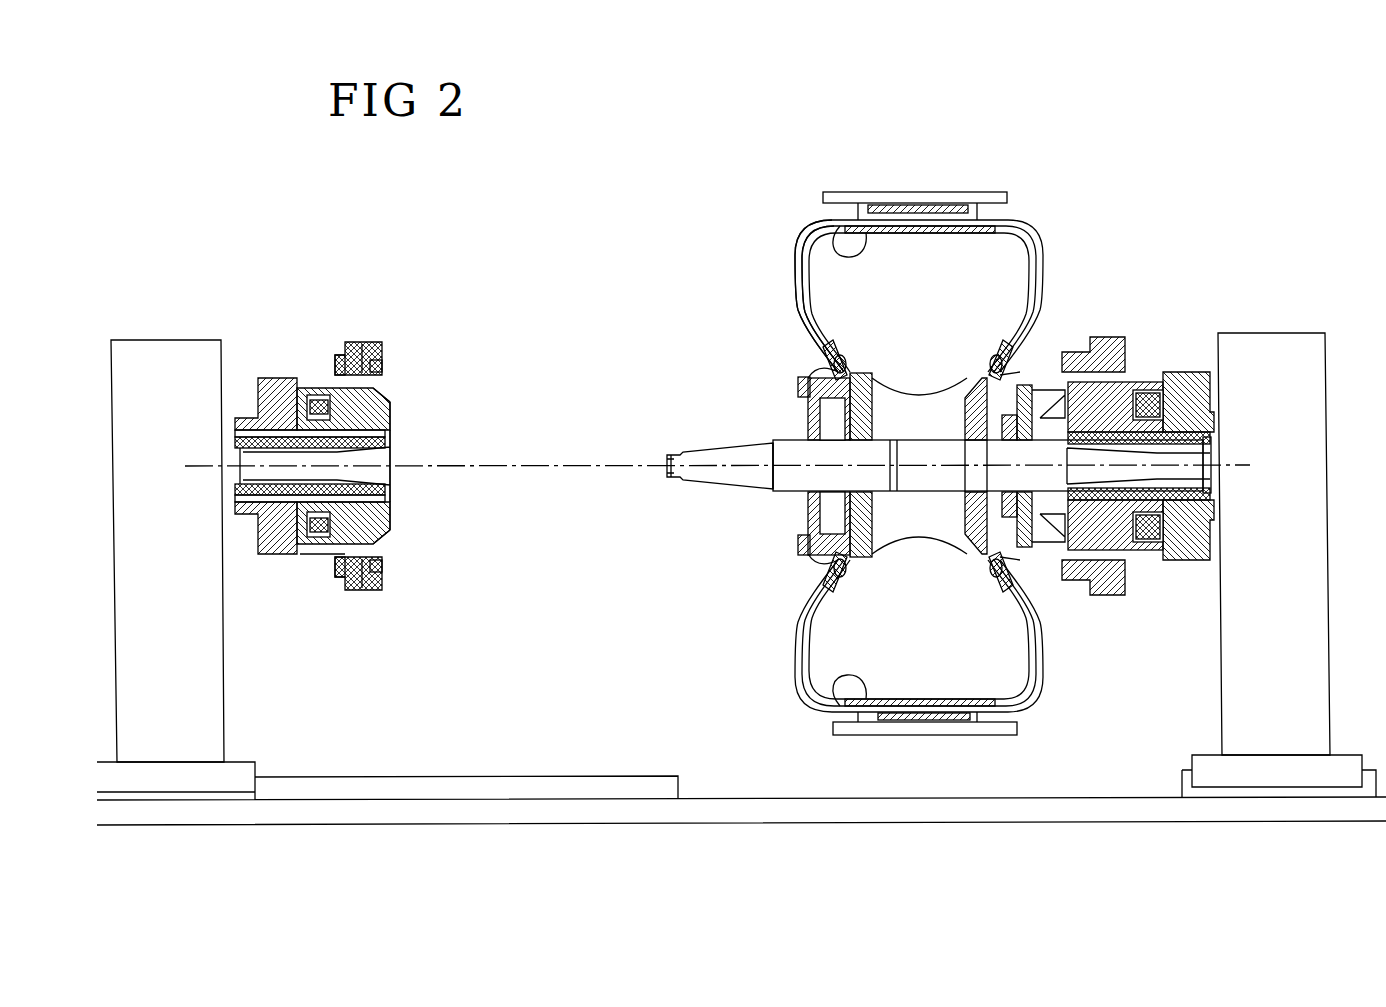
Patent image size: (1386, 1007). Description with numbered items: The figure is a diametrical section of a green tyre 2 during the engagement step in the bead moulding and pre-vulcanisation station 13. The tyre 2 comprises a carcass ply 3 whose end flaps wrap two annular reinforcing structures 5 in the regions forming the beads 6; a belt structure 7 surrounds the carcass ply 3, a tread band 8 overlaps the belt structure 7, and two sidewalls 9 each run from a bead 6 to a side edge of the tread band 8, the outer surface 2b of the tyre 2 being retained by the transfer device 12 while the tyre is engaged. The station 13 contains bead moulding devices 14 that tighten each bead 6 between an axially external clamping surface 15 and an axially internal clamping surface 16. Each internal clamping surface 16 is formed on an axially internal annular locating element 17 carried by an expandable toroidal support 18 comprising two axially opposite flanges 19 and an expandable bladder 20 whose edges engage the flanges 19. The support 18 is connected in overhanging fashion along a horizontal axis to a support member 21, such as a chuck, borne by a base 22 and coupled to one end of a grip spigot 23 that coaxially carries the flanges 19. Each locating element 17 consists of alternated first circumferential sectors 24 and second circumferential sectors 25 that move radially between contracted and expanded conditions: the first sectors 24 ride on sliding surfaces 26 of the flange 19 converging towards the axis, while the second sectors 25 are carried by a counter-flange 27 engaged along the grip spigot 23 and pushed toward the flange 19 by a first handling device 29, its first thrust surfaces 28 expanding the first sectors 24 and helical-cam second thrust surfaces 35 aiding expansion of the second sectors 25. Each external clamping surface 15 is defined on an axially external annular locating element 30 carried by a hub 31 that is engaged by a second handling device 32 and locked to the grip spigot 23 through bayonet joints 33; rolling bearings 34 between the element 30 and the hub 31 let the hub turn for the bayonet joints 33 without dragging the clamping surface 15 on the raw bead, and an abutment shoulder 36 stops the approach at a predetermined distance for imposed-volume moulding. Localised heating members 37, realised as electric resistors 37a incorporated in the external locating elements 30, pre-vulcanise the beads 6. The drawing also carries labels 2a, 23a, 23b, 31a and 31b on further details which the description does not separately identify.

The tyre 2 is at (1013, 219).
The sidewall 2a is at (833, 232).
The outer surface 2b is at (860, 215).
The carcass ply 3 is at (1045, 265).
The annular reinforcing structure 5 is at (1052, 345).
The bead 6 is at (820, 347).
The belt structure 7 is at (985, 213).
The tread band 8 is at (833, 220).
The sidewall 9 is at (800, 273).
The transfer device 12 is at (903, 192).
The bead moulding and pre-vulcanisation station 13 is at (1167, 170).
The bead moulding device 14 is at (1147, 337).
The axially external clamping surface 15 is at (392, 360).
The axially internal clamping surface 16 is at (843, 378).
The axially internal annular locating element 17 is at (803, 415).
The expandable toroidal support 18 is at (813, 430).
The flange 19 is at (888, 533).
The expandable bladder 20 is at (903, 398).
The support member 21 is at (220, 452).
The base 22 is at (150, 598).
The grip spigot 23 is at (697, 483).
The spindle nut 23a is at (1190, 347).
The spindle tip 23b is at (670, 478).
The first circumferential sector 24 is at (1030, 545).
The second circumferential sector 25 is at (1062, 530).
The sliding surface 26 is at (822, 368).
The counter-flange 27 is at (797, 507).
The first thrust surface 28 is at (1050, 540).
The first handling device 29 is at (383, 436).
The axially external annular locating element 30 is at (362, 341).
The hub 31 is at (297, 560).
The hub sleeve 31a is at (383, 496).
The hub bottom portion 31b is at (333, 556).
The second handling device 32 is at (272, 377).
The bayonet joint 33 is at (773, 485).
The rolling bearing 34 is at (347, 342).
The second thrust surface 35 is at (383, 392).
The abutment shoulder 36 is at (395, 377).
The localised tyre heating member 37 is at (375, 340).
The electric resistor 37a is at (383, 345).